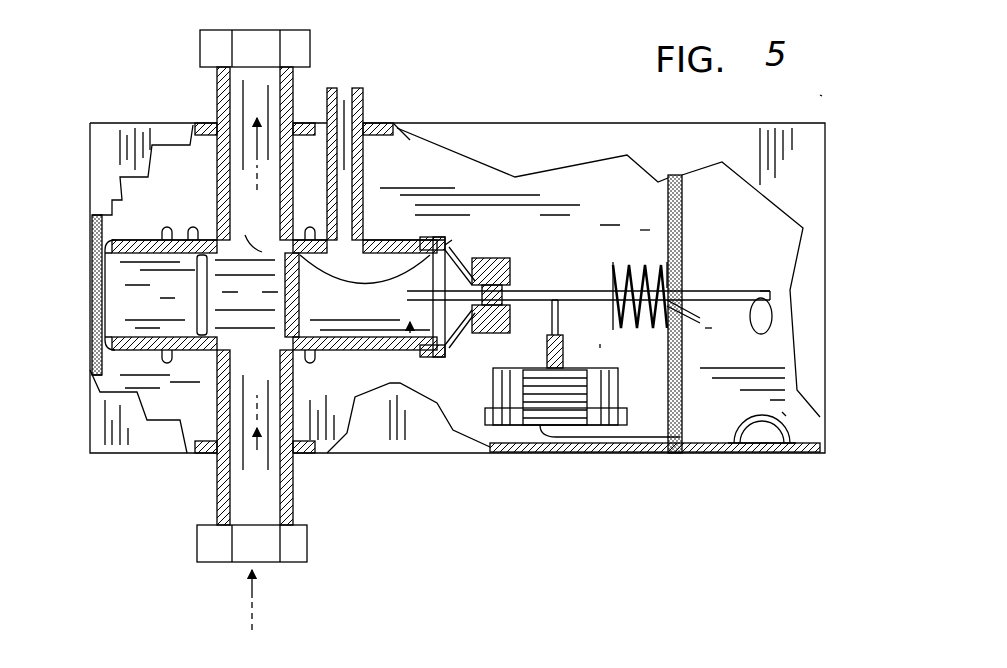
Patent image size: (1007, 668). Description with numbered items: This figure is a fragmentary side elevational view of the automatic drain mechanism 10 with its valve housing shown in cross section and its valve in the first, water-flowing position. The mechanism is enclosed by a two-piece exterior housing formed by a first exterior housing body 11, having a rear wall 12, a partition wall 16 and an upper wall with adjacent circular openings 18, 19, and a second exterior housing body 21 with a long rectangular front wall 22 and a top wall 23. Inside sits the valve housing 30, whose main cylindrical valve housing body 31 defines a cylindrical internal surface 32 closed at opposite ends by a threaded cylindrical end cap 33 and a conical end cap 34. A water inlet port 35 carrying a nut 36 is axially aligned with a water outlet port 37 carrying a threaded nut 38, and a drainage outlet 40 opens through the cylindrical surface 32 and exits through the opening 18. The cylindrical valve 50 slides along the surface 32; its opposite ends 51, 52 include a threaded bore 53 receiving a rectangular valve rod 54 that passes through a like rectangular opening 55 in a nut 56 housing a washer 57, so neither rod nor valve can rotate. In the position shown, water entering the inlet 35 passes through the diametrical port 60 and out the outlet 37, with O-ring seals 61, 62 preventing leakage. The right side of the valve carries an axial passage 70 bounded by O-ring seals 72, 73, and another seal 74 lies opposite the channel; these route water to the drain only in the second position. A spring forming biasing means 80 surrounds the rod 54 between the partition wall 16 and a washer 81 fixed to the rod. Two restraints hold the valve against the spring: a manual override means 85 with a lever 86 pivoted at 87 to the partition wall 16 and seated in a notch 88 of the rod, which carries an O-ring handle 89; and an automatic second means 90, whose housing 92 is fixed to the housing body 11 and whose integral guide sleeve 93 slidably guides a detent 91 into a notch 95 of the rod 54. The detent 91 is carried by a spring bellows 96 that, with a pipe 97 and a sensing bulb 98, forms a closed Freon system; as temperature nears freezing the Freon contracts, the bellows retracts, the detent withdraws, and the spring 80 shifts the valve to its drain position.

The automatic drain mechanism 10 is at (828, 92).
The first exterior housing body 11 is at (782, 415).
The rear wall 12 is at (620, 196).
The partition wall 16 is at (683, 190).
The circular opening 18 is at (366, 128).
The circular opening 19 is at (296, 125).
The second exterior housing body 21 is at (822, 382).
The front wall 22 is at (525, 160).
The top wall 23 is at (200, 125).
The valve housing 30 is at (412, 190).
The main valve housing body 31 is at (140, 352).
The cylindrical internal surface 32 is at (160, 308).
The cylindrical end cap 33 is at (92, 362).
The conical end cap 34 is at (443, 240).
The water inlet port 35 is at (294, 480).
The nut 36 is at (266, 553).
The water outlet port 37 is at (266, 106).
The threaded nut 38 is at (268, 58).
The drainage outlet 40 is at (343, 88).
The valve 50 is at (436, 348).
The valve end 51 is at (196, 278).
The valve end 52 is at (458, 258).
The threaded bore 53 is at (406, 296).
The valve rod 54 is at (576, 291).
The rectangular opening 55 is at (504, 290).
The nut 56 is at (492, 333).
The washer 57 is at (512, 268).
The diametrical port 60 is at (246, 294).
The O-ring seal 61 is at (188, 234).
The O-ring seal 62 is at (254, 236).
The axial passage 70 is at (356, 262).
The O-ring seal 72 is at (300, 285).
The O-ring seal 73 is at (452, 346).
The seal 74 is at (337, 332).
The biasing means 80 is at (645, 228).
The washer 81 is at (612, 262).
The manual override means 85 is at (742, 375).
The lever 86 is at (700, 318).
The pivot 87 is at (708, 330).
The notch 88 is at (712, 291).
The O-ring handle 89 is at (764, 335).
The automatic second means 90 is at (604, 346).
The detent 91 is at (560, 320).
The housing 92 is at (493, 390).
The guide sleeve 93 is at (564, 346).
The notch 95 is at (553, 302).
The spring bellows 96 is at (540, 430).
The pipe 97 is at (640, 452).
The sensing bulb 98 is at (762, 452).